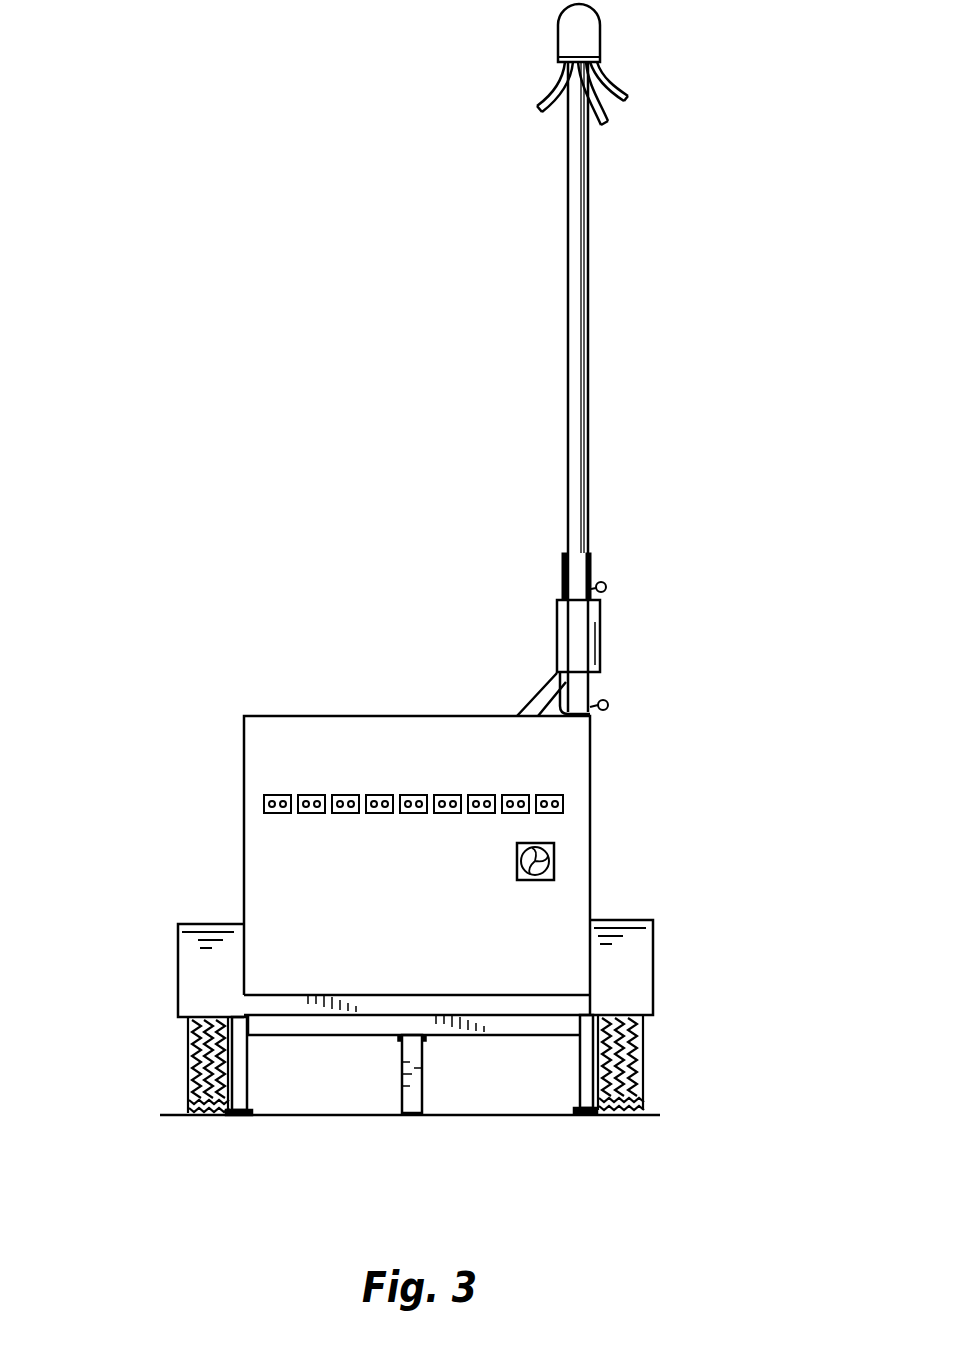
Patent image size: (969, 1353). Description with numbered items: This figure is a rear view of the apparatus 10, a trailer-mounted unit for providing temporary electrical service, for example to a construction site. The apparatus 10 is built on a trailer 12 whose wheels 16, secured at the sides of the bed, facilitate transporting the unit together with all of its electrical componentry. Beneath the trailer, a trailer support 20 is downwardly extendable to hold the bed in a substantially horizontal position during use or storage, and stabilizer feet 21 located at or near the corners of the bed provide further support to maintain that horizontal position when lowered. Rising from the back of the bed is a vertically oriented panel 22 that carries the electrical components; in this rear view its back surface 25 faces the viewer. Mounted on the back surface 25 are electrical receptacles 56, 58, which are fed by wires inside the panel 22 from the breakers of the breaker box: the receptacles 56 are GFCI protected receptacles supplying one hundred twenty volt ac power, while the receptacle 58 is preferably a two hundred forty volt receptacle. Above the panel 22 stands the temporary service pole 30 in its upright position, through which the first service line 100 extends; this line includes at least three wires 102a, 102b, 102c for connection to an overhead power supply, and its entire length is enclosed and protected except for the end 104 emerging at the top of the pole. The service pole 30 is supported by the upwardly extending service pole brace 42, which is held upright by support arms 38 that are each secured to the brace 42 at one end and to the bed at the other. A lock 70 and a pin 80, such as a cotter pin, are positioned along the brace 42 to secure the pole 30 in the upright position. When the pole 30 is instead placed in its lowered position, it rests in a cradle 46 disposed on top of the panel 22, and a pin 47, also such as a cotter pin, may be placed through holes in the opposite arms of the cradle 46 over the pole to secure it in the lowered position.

The apparatus 10 is at (205, 383).
The trailer 12 is at (683, 768).
The wheels 16 is at (195, 1063).
The trailer support 20 is at (400, 1103).
The stabilizer feet 21 is at (258, 1093).
The panel 22 is at (220, 700).
The back surface 25 is at (277, 755).
The temporary service pole 30 is at (575, 375).
The support arms 38 is at (535, 697).
The service pole brace 42 is at (590, 567).
The cradle 46 is at (592, 698).
The pin 47 is at (609, 703).
The electrical receptacles 56 is at (493, 808).
The electrical receptacle 58 is at (553, 853).
The lock 70 is at (542, 637).
The pin 80 is at (605, 588).
The first service line 100 is at (398, 68).
The wire 102a is at (547, 83).
The wire 102b is at (580, 100).
The wire 102c is at (626, 112).
The end 104 is at (647, 107).